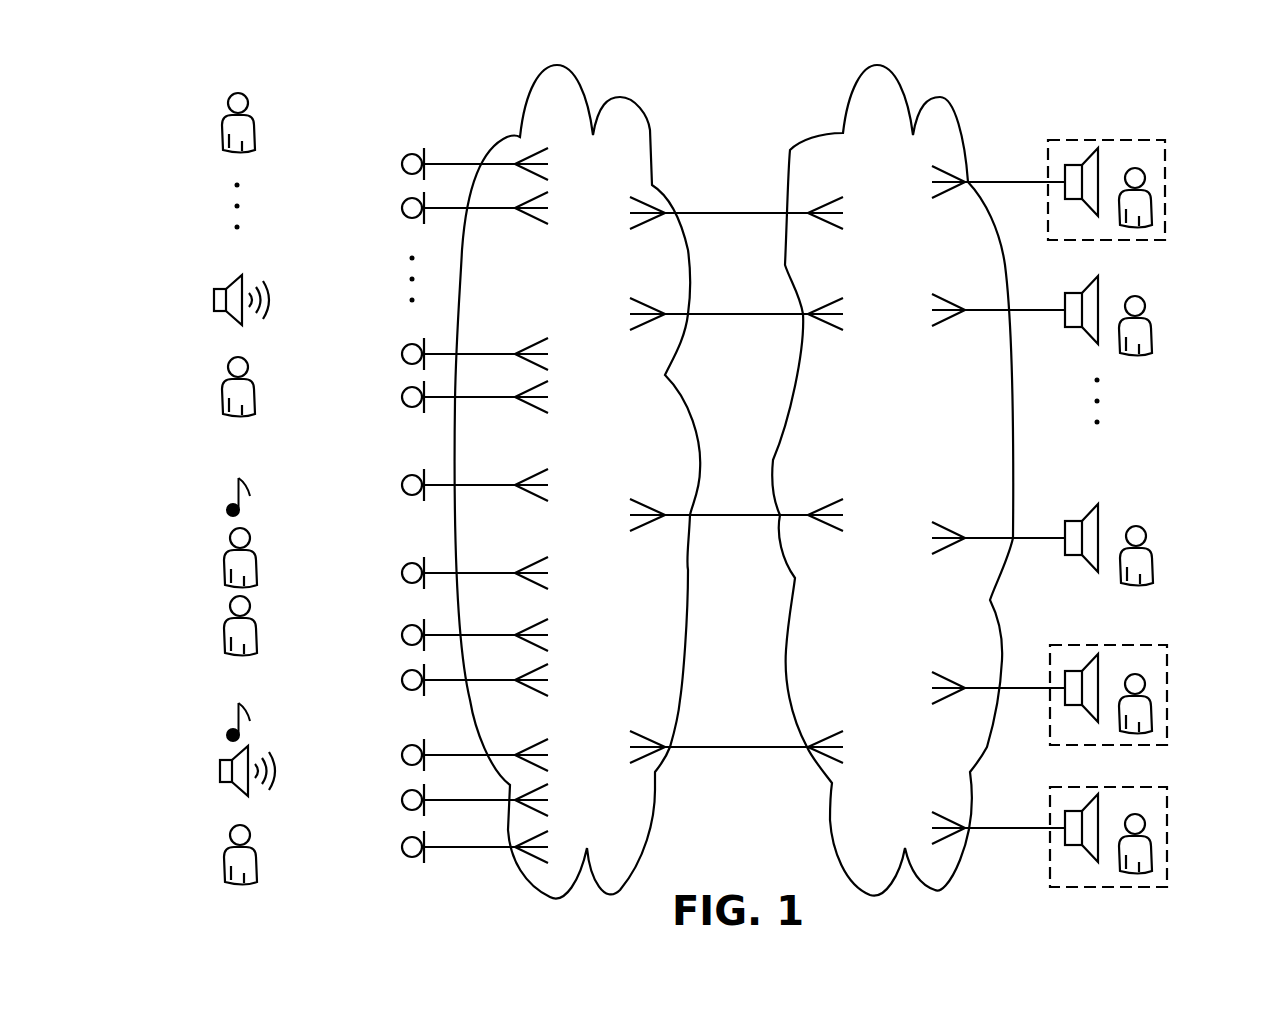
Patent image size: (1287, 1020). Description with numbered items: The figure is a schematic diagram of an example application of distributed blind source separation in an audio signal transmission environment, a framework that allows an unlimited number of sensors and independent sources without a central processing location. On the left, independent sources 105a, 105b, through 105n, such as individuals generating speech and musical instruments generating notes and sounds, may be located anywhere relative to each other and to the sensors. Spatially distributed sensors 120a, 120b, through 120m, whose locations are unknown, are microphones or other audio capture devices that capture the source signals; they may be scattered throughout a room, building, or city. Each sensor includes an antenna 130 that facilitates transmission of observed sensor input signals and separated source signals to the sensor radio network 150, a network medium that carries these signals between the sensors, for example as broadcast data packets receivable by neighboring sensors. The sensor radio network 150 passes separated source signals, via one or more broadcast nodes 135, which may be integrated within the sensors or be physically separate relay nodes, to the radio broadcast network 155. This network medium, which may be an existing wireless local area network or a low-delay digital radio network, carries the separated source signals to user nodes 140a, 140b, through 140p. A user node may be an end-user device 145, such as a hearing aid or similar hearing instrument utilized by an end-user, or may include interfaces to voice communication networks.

The independent source 105n is at (222, 118).
The independent source 105b is at (220, 768).
The independent source 105a is at (222, 848).
The sensor 120m is at (398, 164).
The sensor 120b is at (400, 800).
The sensor 120a is at (400, 847).
The antenna 130 is at (500, 152).
The sensor radio network 150 is at (652, 128).
The broadcast node 135 is at (726, 213).
The radio broadcast network 155 is at (968, 130).
The user node 140p is at (1165, 188).
The end-user device 145 is at (1100, 520).
The user node 140b is at (1167, 695).
The user node 140a is at (1167, 835).